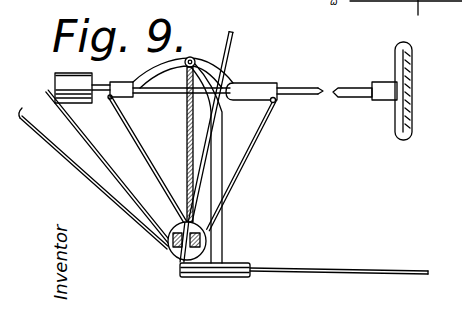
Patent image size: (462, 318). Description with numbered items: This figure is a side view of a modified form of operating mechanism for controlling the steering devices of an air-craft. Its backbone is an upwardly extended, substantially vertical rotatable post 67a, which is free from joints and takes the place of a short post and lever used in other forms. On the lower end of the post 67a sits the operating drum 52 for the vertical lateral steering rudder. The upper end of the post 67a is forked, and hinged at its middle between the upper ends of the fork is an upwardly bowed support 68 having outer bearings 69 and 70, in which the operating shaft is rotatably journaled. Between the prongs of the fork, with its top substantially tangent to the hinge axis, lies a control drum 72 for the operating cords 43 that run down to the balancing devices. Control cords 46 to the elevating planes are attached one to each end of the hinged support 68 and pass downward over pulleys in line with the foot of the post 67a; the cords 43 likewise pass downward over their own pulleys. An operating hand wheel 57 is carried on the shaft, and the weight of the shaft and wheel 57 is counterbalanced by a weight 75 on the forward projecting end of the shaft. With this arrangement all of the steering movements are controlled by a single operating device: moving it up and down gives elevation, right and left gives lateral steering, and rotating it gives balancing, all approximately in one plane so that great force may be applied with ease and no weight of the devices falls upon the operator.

The weight 75 is at (57, 78).
The outer bearing 69 is at (130, 90).
The upwardly bowed support 68 is at (230, 77).
The outer bearing 70 is at (249, 88).
The control drum 72 is at (186, 108).
The operating cords 43 is at (188, 128).
The rotatable post 67a is at (228, 153).
The control cords 46 is at (51, 100).
The operating hand wheel 57 is at (413, 78).
The operating drum 52 is at (210, 277).